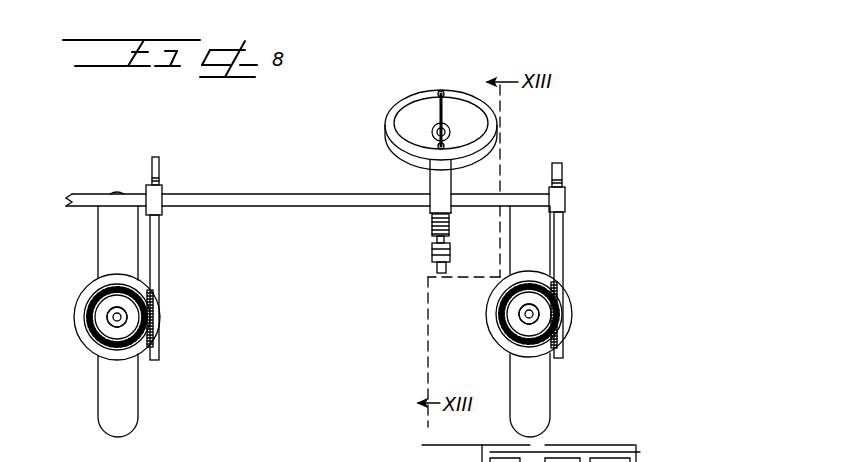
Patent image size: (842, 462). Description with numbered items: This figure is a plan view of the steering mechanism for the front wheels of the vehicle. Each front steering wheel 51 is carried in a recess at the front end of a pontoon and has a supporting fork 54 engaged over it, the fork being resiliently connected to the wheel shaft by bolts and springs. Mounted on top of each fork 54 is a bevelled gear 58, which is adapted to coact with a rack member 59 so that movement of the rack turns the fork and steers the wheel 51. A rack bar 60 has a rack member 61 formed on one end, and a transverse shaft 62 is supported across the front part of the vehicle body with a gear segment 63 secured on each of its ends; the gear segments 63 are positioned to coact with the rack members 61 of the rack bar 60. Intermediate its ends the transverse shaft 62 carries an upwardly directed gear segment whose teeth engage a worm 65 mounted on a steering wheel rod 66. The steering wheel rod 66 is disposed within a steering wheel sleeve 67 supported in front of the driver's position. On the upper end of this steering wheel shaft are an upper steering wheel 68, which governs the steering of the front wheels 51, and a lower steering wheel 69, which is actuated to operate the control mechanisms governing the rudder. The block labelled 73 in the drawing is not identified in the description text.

The front steering wheel 51 is at (527, 388).
The supporting fork 54 is at (150, 341).
The bevelled gear 58 is at (118, 347).
The rack member 59 is at (158, 300).
The rack bar 60 is at (160, 250).
The rack member 61 is at (160, 219).
The transverse shaft 62 is at (263, 197).
The gear segment 63 is at (566, 203).
The worm 65 is at (432, 226).
The steering wheel rod 66 is at (432, 253).
The steering wheel sleeve 67 is at (441, 183).
The upper steering wheel 68 is at (418, 130).
The lower steering wheel 69 is at (398, 153).
The block 73 is at (153, 196).